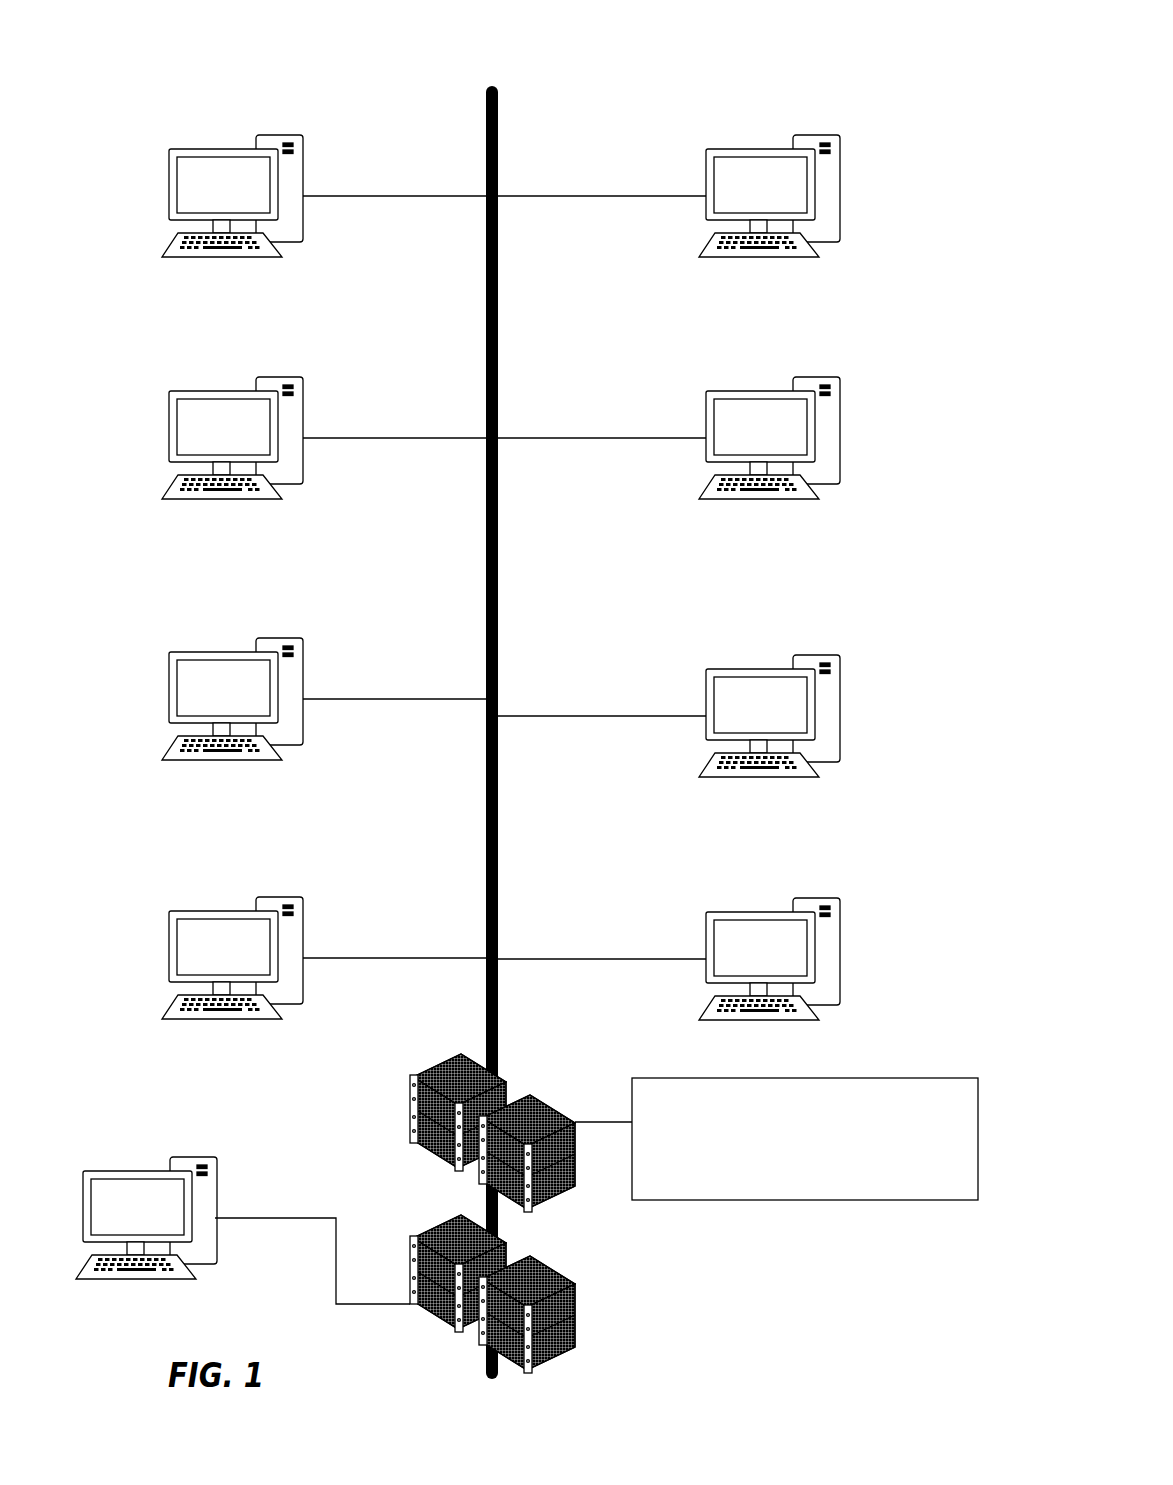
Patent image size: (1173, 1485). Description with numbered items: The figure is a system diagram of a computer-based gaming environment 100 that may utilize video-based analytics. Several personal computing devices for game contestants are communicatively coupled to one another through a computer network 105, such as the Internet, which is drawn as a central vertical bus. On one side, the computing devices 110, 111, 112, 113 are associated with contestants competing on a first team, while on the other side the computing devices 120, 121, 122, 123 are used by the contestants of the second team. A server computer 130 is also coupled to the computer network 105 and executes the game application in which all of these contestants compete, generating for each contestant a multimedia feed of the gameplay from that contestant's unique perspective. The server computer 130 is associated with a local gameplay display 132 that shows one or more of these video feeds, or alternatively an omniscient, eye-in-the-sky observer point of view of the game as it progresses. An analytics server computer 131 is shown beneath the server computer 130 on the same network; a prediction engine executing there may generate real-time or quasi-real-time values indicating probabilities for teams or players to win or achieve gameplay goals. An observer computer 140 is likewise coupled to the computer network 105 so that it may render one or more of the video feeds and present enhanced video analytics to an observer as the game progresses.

The computer-based gaming environment 100 is at (906, 24).
The computer network 105 is at (452, 732).
The personal computing device 110 is at (304, 221).
The personal computing device 111 is at (304, 470).
The personal computing device 112 is at (304, 727).
The personal computing device 113 is at (304, 987).
The personal computing device 120 is at (843, 192).
The personal computing device 121 is at (843, 435).
The personal computing device 122 is at (843, 710).
The personal computing device 123 is at (843, 970).
The server computer 130 is at (413, 1165).
The analytics server computer 131 is at (578, 1305).
The gameplay display 132 is at (805, 1139).
The observer computer 140 is at (218, 1247).